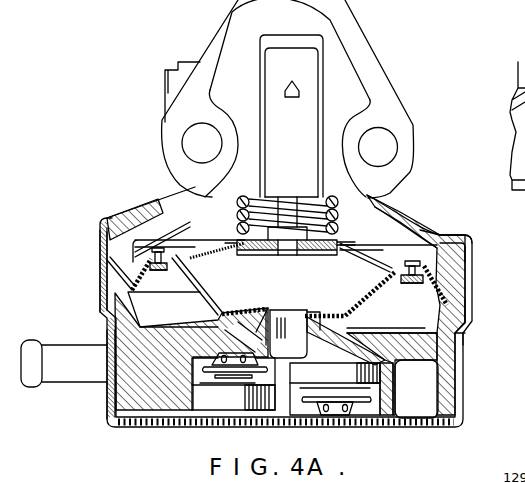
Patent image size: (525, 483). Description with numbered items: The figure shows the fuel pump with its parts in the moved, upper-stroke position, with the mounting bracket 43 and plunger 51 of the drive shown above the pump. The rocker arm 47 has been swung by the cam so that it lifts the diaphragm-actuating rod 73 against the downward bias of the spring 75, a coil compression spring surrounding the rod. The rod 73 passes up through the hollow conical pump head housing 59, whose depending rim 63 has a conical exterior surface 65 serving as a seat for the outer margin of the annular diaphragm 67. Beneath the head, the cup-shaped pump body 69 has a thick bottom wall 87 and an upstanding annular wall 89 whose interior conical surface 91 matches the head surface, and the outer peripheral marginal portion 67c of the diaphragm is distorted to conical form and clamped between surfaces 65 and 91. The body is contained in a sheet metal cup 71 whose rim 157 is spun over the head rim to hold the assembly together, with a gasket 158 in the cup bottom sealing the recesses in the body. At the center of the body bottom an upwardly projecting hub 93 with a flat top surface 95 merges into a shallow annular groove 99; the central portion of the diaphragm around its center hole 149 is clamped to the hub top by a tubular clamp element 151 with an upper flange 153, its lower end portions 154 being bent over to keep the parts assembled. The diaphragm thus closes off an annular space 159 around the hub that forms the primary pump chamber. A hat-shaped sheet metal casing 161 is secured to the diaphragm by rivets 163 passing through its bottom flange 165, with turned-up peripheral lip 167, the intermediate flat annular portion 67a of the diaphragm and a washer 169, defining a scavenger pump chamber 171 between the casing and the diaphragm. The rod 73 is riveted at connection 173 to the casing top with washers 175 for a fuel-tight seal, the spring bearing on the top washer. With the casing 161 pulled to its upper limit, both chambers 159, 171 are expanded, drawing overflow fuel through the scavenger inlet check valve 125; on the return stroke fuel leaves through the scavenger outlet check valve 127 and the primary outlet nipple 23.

The primary outlet nipple 23 is at (46, 338).
The mounting bracket 43 is at (396, 93).
The rocker arm 47 is at (318, 81).
The plunger 51 is at (305, 164).
The pump head housing 59 is at (393, 206).
The depending rim 63 is at (106, 240).
The conical exterior surface 65 is at (467, 263).
The annular diaphragm 67 is at (385, 303).
The intermediate flat annular portion of the diaphragm 67a is at (402, 258).
The outer peripheral marginal portion of the diaphragm 67c is at (108, 263).
The pump body 69 is at (121, 341).
The sheet metal cup 71 is at (464, 362).
The diaphragm-actuating rod 73 is at (293, 200).
The spring 75 is at (342, 200).
The bottom wall 87 is at (135, 396).
The annular wall 89 is at (108, 298).
The interior conical surface 91 is at (467, 315).
The hub 93 is at (238, 314).
The flat top surface 95 is at (331, 320).
The annular groove 99 is at (197, 333).
The scavenger inlet check valve 125 is at (254, 414).
The scavenger outlet check valve 127 is at (345, 422).
The center hole 149 is at (272, 317).
The tubular clamp element 151 is at (296, 325).
The upper flange 153 is at (318, 318).
The lower end portions 154 is at (273, 346).
The rim 157 is at (467, 235).
The gasket 158 is at (431, 423).
The annular space 159 is at (468, 333).
The sheet metal casing 161 is at (356, 240).
The rivets 163 is at (158, 248).
The bottom flange 165 is at (429, 242).
The turned-up peripheral lip 167 is at (473, 248).
The washer 169 is at (163, 272).
The scavenger pump chamber 171 is at (216, 268).
The riveted connection 173 is at (299, 257).
The washers 175 is at (251, 256).